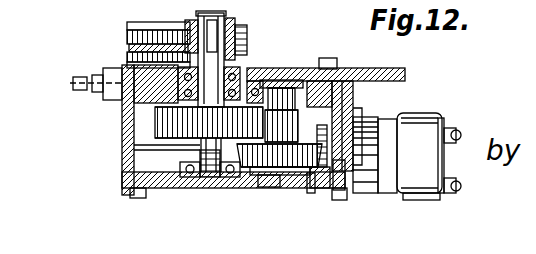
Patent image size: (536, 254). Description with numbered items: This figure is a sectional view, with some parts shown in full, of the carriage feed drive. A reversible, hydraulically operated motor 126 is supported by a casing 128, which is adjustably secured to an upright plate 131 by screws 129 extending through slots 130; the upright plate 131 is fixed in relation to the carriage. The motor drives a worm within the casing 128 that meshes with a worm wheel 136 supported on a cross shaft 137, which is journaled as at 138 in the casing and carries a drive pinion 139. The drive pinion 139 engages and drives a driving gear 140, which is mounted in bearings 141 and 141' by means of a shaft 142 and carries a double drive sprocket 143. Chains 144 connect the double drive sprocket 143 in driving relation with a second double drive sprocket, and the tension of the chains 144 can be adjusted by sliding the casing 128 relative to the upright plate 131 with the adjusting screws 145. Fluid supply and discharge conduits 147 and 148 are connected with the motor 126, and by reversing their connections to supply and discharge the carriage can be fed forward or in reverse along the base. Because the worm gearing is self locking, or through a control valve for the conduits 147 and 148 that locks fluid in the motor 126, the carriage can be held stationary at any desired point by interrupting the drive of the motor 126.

The motor 126 is at (420, 178).
The casing 128 is at (350, 105).
The screws 129 is at (140, 48).
The slots 130 is at (134, 66).
The upright plate 131 is at (372, 73).
The worm wheel 136 is at (310, 193).
The cross shaft 137 is at (283, 182).
The journal 138 is at (275, 67).
The drive pinion 139 is at (298, 120).
The driving gear 140 is at (160, 115).
The bearing 141 is at (190, 192).
The bearing 141' is at (270, 66).
The shaft 142 is at (208, 168).
The double drive sprocket 143 is at (223, 26).
The chains 144 is at (142, 26).
The adjusting screws 145 is at (93, 78).
The fluid supply and discharge conduit 147 is at (460, 130).
The fluid supply and discharge conduit 148 is at (458, 190).